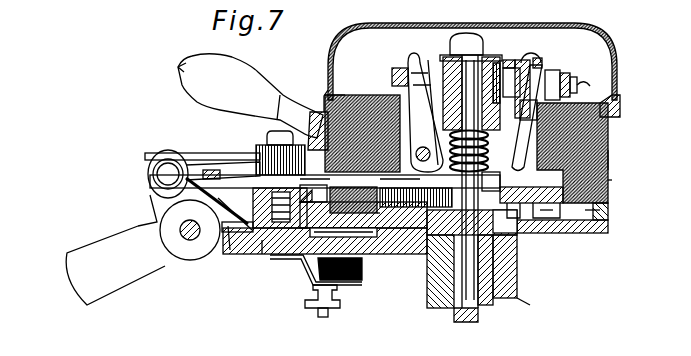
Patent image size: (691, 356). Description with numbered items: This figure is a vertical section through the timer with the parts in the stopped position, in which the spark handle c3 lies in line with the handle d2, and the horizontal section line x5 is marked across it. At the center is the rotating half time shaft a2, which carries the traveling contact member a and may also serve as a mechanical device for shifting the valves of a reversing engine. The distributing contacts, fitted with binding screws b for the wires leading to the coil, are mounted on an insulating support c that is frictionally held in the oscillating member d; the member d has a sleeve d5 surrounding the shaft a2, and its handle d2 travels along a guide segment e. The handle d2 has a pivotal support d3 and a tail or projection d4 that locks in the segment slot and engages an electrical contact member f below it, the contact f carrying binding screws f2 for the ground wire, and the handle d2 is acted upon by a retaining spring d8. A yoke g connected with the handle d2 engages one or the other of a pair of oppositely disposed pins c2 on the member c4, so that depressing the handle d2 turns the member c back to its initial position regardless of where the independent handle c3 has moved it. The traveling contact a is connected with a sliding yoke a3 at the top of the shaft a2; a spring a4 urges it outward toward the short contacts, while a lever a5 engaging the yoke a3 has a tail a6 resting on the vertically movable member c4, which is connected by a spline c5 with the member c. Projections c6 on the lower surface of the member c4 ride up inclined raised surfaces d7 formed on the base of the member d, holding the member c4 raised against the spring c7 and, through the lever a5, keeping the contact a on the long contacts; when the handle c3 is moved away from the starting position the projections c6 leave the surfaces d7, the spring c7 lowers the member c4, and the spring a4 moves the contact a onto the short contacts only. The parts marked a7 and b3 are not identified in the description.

The traveling contact member a is at (580, 65).
The rotating half time shaft a2 is at (458, 322).
The sliding yoke a3 is at (395, 70).
The spring a4 is at (528, 44).
The lever a5 is at (412, 64).
The tail of lever a6 is at (452, 38).
The boss a7 is at (523, 258).
The binding screws b is at (588, 86).
The casing wall b3 is at (351, 97).
The insulating support c is at (612, 162).
The pins or projections c2 is at (418, 254).
The independent handle c3 is at (253, 102).
The vertically movable member c4 is at (560, 234).
The spline c5 is at (595, 234).
The projections c6 is at (385, 250).
The spring c7 is at (339, 184).
The oscillating member d is at (608, 232).
The handle d2 is at (115, 265).
The pivotal support d3 is at (190, 240).
The tail or projection d4 is at (226, 252).
The sleeve d5 is at (514, 305).
The raised surfaces d7 is at (376, 258).
The retaining spring d8 is at (204, 160).
The guide segment e is at (252, 248).
The electrical contact member f is at (298, 262).
The binding screws f2 is at (310, 300).
The yoke g is at (262, 256).
The section line x5 is at (612, 180).